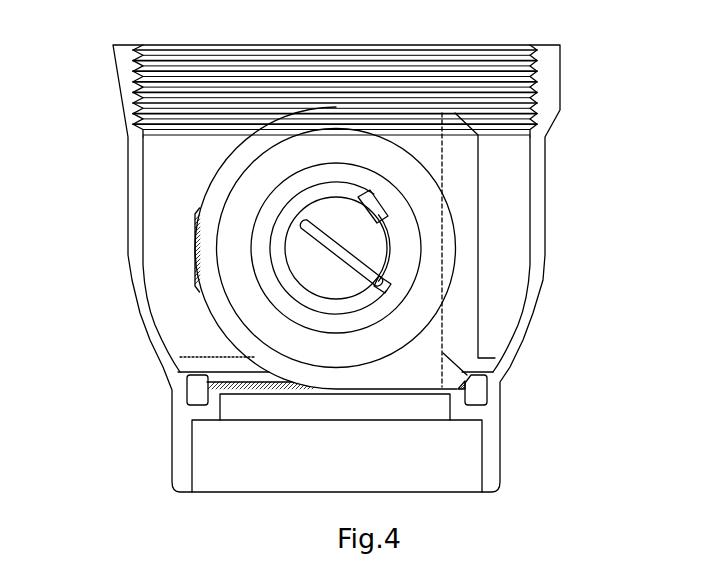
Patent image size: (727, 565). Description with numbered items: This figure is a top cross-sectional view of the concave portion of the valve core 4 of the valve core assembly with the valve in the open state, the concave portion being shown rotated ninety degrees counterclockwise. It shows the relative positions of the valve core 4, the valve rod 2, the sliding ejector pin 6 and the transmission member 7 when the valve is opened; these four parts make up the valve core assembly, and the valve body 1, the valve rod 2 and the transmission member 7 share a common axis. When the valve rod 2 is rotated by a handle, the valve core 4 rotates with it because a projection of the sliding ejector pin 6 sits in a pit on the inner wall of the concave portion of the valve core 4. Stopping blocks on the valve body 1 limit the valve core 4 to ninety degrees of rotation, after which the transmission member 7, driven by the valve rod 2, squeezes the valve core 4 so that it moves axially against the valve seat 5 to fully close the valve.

The valve body 1 is at (128, 80).
The valve rod 2 is at (352, 230).
The valve core 4 is at (497, 380).
The valve seat 5 is at (186, 391).
The sliding ejector pin 6 is at (385, 283).
The transmission member 7 is at (376, 201).